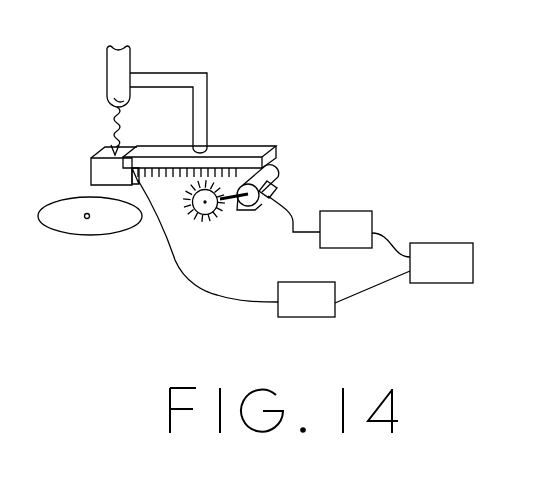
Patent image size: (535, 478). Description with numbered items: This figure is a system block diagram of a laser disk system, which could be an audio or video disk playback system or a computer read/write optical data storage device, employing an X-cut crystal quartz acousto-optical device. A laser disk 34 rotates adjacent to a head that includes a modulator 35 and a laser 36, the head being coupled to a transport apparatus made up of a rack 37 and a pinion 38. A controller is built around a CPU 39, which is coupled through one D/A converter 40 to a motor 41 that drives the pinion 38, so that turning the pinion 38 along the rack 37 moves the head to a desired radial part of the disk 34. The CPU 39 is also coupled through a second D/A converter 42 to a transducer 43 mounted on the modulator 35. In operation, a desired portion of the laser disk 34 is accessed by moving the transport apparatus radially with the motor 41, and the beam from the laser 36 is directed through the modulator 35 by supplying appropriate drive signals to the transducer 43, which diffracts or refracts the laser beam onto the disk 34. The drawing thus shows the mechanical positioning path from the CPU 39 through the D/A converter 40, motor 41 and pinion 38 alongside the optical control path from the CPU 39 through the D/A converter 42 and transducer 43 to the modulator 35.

The laser disk 34 is at (55, 200).
The modulator 35 is at (91, 168).
The laser 36 is at (107, 73).
The rack 37 is at (238, 152).
The pinion 38 is at (198, 223).
The CPU 39 is at (443, 243).
The D/A converter 40 is at (343, 211).
The motor 41 is at (280, 173).
The D/A converter 42 is at (306, 318).
The transducer 43 is at (139, 170).